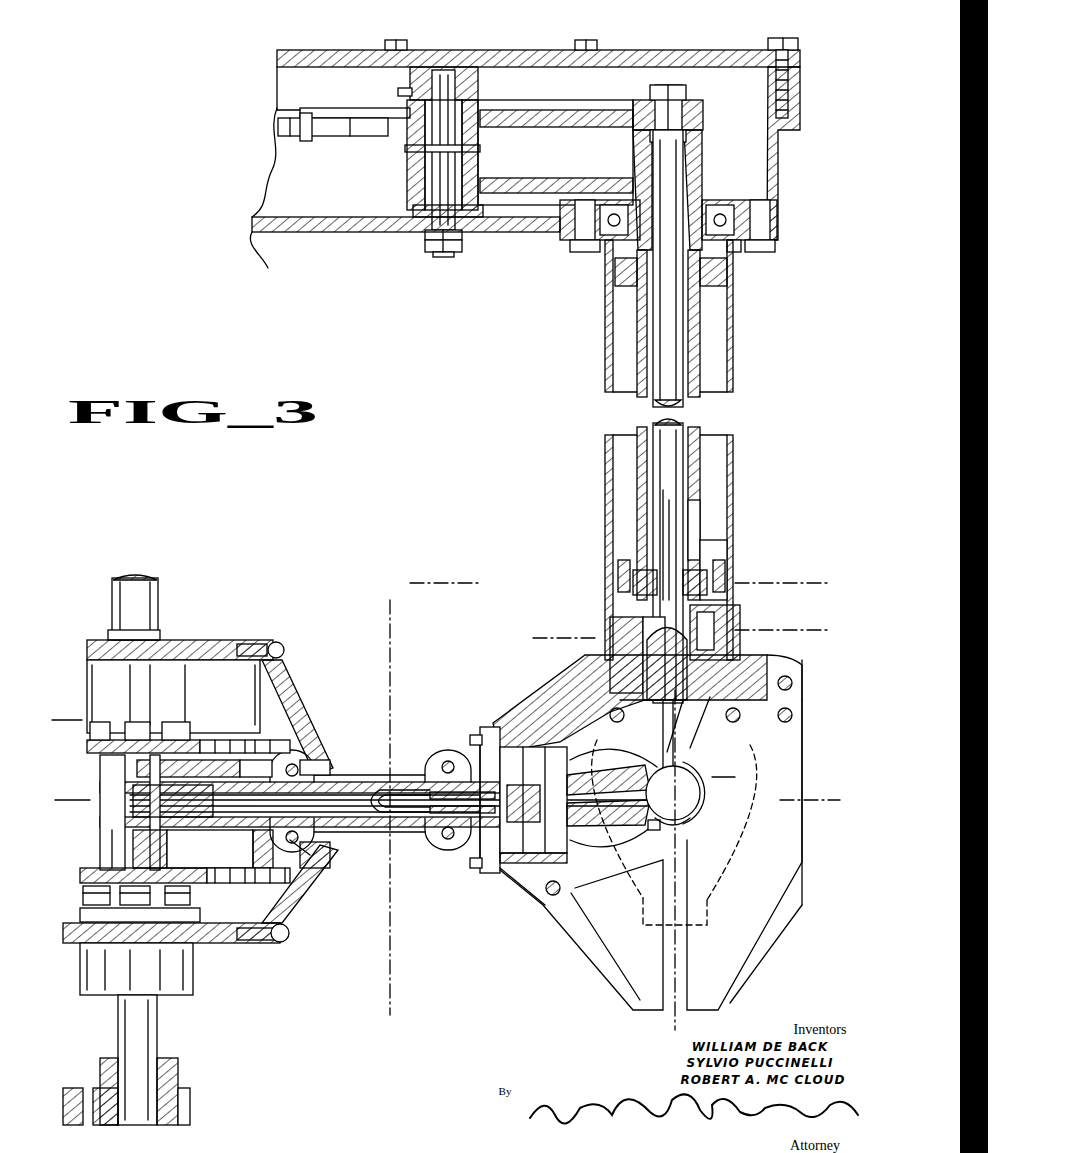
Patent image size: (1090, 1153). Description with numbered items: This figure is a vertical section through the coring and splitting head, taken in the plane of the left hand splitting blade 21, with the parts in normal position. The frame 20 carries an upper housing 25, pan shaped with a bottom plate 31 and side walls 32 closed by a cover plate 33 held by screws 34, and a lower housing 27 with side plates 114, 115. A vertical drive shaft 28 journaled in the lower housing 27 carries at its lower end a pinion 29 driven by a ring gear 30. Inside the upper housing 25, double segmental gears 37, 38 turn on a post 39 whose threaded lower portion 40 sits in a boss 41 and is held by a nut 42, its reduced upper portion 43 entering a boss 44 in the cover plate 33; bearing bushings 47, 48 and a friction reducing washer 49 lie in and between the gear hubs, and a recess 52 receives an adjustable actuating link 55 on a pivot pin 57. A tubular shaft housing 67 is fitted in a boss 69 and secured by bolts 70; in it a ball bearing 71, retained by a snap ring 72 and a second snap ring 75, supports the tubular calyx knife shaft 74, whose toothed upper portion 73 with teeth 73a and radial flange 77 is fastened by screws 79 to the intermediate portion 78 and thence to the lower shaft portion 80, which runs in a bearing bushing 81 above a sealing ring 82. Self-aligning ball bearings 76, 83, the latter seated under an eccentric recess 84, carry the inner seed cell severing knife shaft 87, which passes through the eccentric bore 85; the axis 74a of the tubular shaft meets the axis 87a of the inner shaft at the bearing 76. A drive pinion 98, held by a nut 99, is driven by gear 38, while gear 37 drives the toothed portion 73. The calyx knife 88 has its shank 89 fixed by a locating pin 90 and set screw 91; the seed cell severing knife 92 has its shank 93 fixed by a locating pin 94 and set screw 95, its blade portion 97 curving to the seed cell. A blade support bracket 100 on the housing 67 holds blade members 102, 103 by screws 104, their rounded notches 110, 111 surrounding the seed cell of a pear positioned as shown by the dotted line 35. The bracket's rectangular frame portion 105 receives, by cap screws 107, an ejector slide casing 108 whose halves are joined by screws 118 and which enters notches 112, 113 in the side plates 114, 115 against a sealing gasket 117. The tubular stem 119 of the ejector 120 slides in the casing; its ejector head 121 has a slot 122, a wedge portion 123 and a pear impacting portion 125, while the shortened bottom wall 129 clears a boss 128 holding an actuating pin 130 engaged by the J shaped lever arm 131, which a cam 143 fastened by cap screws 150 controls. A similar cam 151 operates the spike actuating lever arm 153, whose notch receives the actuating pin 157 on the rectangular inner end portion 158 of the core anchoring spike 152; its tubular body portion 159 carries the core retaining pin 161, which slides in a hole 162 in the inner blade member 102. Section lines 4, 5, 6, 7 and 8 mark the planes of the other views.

The frame 20 is at (300, 690).
The splitting blade 21 is at (612, 947).
The upper housing 25 is at (345, 228).
The lower housing 27 is at (302, 703).
The vertical drive shaft 28 is at (152, 590).
The pinion 29 is at (178, 1080).
The ring gear 30 is at (88, 1122).
The bottom plate 31 is at (262, 240).
The side walls 32 is at (770, 163).
The cover plate 33 is at (280, 62).
The screws 34 is at (392, 40).
The dotted line 35 is at (780, 826).
The double segmental gear 37 is at (520, 178).
The double segmental gear 38 is at (518, 128).
The post 39 is at (440, 182).
The reduced threaded lower portion 40 is at (438, 215).
The boss 41 is at (432, 216).
The nut 42 is at (437, 250).
The reduced upper portion 43 is at (445, 72).
The boss 44 is at (468, 82).
The bearing bushing 47 is at (410, 165).
The bearing bushing 48 is at (410, 152).
The friction reducing washer 49 is at (482, 152).
The recess 52 is at (398, 110).
The adjustable actuating link 55 is at (283, 130).
The pivot pin 57 is at (405, 88).
The tubular vertical shaft housing 67 is at (610, 447).
The boss 69 is at (553, 232).
The bolts 70 is at (578, 246).
The ball bearing 71 is at (740, 256).
The snap ring 72 is at (738, 200).
The toothed upper shaft portion 73 is at (690, 160).
The teeth 73a is at (635, 160).
The tubular calyx knife shaft 74 is at (712, 363).
The axis 74a is at (692, 512).
The second snap ring 75 is at (708, 205).
The self-aligning ball bearing 76 is at (700, 143).
The radial flange 77 is at (735, 268).
The intermediate calyx knife shaft portion 78 is at (700, 380).
The screws 79 is at (612, 286).
The lower shaft portion 80 is at (620, 572).
The bearing bushing 81 is at (612, 650).
The lubricant sealing ring 82 is at (572, 688).
The self-aligning ball bearing 83 is at (633, 588).
The eccentric recess 84 is at (702, 548).
The bore 85 is at (712, 612).
The inner seed cell severing knife shaft 87 is at (685, 400).
The axis 87a is at (668, 535).
The calyx knife 88 is at (693, 758).
The shank 89 is at (790, 668).
The locating pin 90 is at (716, 632).
The set screw 91 is at (695, 752).
The seed cell severing knife 92 is at (705, 786).
The shank 93 is at (645, 660).
The locating pin 94 is at (645, 625).
The set screw 95 is at (640, 682).
The blade portion 97 is at (703, 806).
The drive pinion 98 is at (690, 103).
The nut 99 is at (668, 90).
The splitting blade support bracket 100 is at (548, 690).
The blade member 102 is at (632, 982).
The blade member 103 is at (720, 977).
The screws 104 is at (610, 716).
The rectangular frame portion 105 is at (500, 725).
The cap screws 107 is at (476, 735).
The ejector slide casing 108 is at (402, 768).
The rounded notch 110 is at (656, 826).
The rounded notch 111 is at (697, 825).
The notch 112 is at (305, 850).
The notch 113 is at (304, 760).
The side plate 114 is at (322, 860).
The side plate 115 is at (283, 665).
The sealing gasket 117 is at (314, 842).
The screws 118 is at (296, 766).
The rectangular tubular stem 119 is at (400, 812).
The ejector 120 is at (528, 768).
The ejector head 121 is at (538, 790).
The slot 122 is at (445, 785).
The pear separating wedge portion 123 is at (568, 864).
The pear impacting portion 125 is at (590, 780).
The boss 128 is at (117, 812).
The shortened bottom wall 129 is at (390, 803).
The ejector actuating pin 130 is at (118, 835).
The cam actuated lever arm 131 is at (230, 857).
The cam 143 is at (300, 868).
The cap screws 150 is at (208, 905).
The cam 151 is at (290, 740).
The core anchoring spike 152 is at (440, 815).
The spike actuating lever arm 153 is at (213, 757).
The actuating pin 157 is at (152, 772).
The rectangular inner end portion 158 is at (148, 786).
The tubular body portion 159 is at (300, 803).
The core retaining pin 161 is at (539, 803).
The hole 162 is at (608, 822).
The section line 4- 4 is at (68, 798).
The section line 5- 5 is at (68, 718).
The section line 6- 6 is at (415, 560).
The section line 7- 7 is at (550, 612).
The section line 8- 8 is at (388, 617).